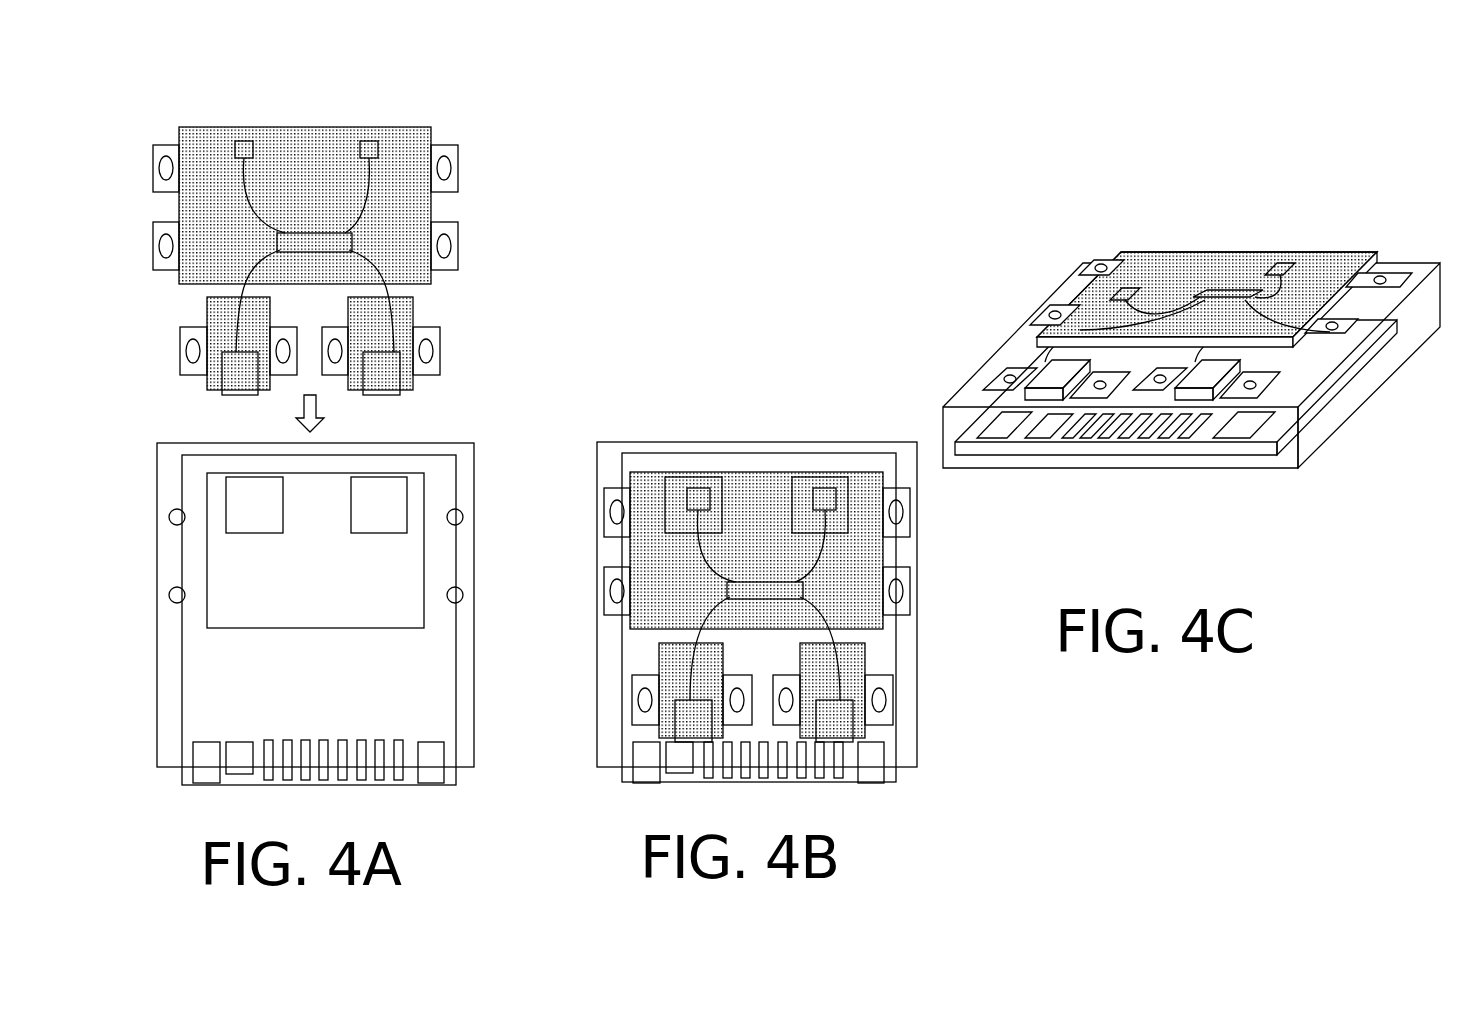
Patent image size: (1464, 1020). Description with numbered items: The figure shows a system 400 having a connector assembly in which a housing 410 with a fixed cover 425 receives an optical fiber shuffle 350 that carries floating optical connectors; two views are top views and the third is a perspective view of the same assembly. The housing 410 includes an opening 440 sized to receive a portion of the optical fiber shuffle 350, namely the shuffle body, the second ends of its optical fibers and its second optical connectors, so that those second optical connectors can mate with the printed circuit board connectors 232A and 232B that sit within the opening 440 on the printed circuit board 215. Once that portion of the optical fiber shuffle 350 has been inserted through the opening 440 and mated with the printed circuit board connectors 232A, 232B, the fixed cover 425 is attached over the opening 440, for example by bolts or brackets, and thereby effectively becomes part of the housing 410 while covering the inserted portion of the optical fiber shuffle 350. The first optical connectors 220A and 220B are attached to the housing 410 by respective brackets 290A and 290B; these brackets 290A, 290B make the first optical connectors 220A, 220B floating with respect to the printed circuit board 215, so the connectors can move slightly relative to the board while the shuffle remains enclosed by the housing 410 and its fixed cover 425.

In FIG. 4A, the system 400 is at (565, 336).
In FIG. 4B, the system 400 is at (693, 404).
In FIG. 4C, the system 400 is at (1112, 203).
In FIG. 4A, the fixed cover 425 is at (330, 127).
In FIG. 4B, the fixed cover 425 is at (755, 470).
In FIG. 4C, the fixed cover 425 is at (1072, 298).
In FIG. 4A, the optical fiber shuffle 350 is at (412, 214).
In FIG. 4A, the bracket 290A is at (193, 314).
In FIG. 4A, the bracket 290B is at (431, 314).
In FIG. 4A, the first optical connector 220A is at (233, 396).
In FIG. 4B, the first optical connector 220A is at (676, 700).
In FIG. 4C, the first optical connector 220A is at (1092, 362).
In FIG. 4A, the first optical connector 220B is at (390, 396).
In FIG. 4B, the first optical connector 220B is at (836, 700).
In FIG. 4C, the first optical connector 220B is at (1258, 352).
In FIG. 4A, the housing 410 is at (475, 543).
In FIG. 4B, the housing 410 is at (918, 557).
In FIG. 4C, the housing 410 is at (973, 373).
In FIG. 4A, the printed circuit board 215 is at (205, 685).
In FIG. 4B, the printed circuit board 215 is at (618, 732).
In FIG. 4C, the printed circuit board 215 is at (1086, 456).
In FIG. 4A, the opening 440 is at (424, 573).
In FIG. 4A, the printed circuit board connector 232A is at (226, 513).
In FIG. 4A, the printed circuit board connector 232B is at (407, 505).